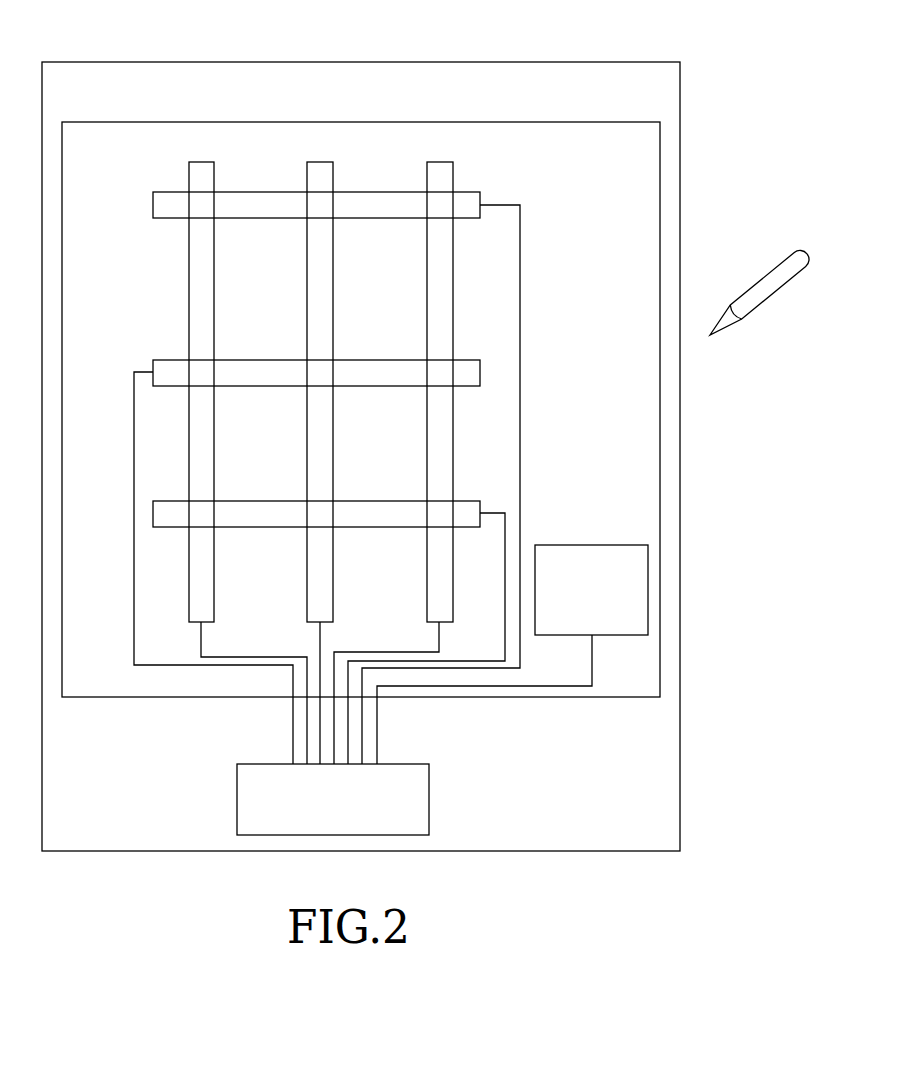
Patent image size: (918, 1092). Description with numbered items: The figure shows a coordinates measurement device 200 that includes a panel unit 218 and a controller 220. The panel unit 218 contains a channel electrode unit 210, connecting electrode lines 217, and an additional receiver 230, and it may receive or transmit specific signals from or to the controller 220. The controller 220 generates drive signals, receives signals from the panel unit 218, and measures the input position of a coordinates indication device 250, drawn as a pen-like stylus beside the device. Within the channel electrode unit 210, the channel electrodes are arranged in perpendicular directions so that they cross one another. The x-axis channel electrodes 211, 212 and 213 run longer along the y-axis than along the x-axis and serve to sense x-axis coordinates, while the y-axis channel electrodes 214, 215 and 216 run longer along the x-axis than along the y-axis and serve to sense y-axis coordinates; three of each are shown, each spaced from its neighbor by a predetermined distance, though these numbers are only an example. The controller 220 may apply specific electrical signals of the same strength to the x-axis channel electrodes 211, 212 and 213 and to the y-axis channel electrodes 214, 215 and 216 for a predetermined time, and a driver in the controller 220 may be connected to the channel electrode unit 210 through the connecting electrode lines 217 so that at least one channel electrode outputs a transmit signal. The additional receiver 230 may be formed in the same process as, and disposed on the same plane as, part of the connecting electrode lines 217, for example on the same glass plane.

The coordinates measurement device 200 is at (404, 62).
The channel electrode unit 210 is at (125, 521).
The x-axis channel electrode 211 is at (200, 162).
The x-axis channel electrode 212 is at (320, 162).
The x-axis channel electrode 213 is at (440, 162).
The y-axis channel electrode 214 is at (170, 192).
The y-axis channel electrode 215 is at (169, 360).
The y-axis channel electrode 216 is at (169, 501).
The connecting electrode lines 217 is at (185, 667).
The panel unit 218 is at (404, 122).
The controller 220 is at (431, 799).
The additional receiver 230 is at (592, 545).
The coordinates indication device 250 is at (757, 282).